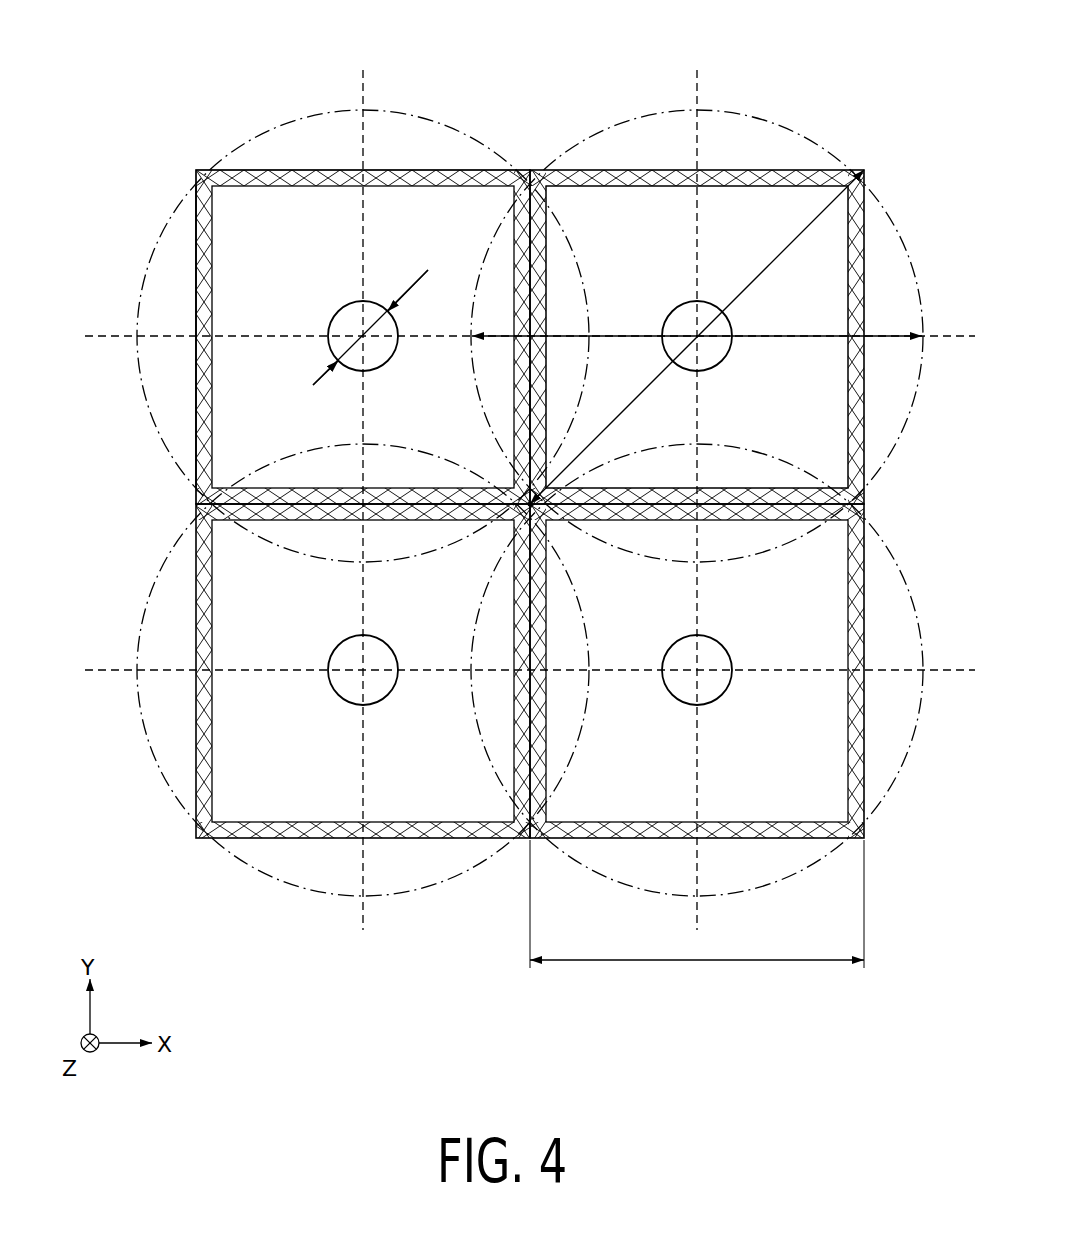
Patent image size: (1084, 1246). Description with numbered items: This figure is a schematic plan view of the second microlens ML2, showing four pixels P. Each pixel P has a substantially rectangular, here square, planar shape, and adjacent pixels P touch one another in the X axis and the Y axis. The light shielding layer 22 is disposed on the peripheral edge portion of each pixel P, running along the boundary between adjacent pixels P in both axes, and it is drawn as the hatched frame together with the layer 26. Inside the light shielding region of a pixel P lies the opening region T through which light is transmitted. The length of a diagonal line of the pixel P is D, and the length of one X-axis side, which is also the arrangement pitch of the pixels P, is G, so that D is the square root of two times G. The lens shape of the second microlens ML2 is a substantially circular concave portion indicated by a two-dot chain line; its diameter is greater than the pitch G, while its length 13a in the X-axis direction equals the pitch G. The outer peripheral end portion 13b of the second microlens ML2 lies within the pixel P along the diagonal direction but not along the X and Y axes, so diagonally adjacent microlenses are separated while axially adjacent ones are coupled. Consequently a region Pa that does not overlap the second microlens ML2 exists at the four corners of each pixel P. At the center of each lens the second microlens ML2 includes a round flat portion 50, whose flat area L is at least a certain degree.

The pixel P is at (296, 166).
The region not overlapping the second microlens Pa is at (529, 186).
The opening region T is at (640, 222).
The second microlens ML2 is at (533, 421).
The light shielding layer 22 is at (530, 460).
The wiring layer 26 is at (405, 169).
The length in the X-axis direction of the second microlens 13a is at (196, 230).
The outer peripheral end portion 13b is at (143, 399).
The flat portion 50 is at (380, 698).
The flat area L is at (370, 326).
The length of diagonal line of the pixel D is at (697, 337).
The arrangement pitch G is at (697, 917).